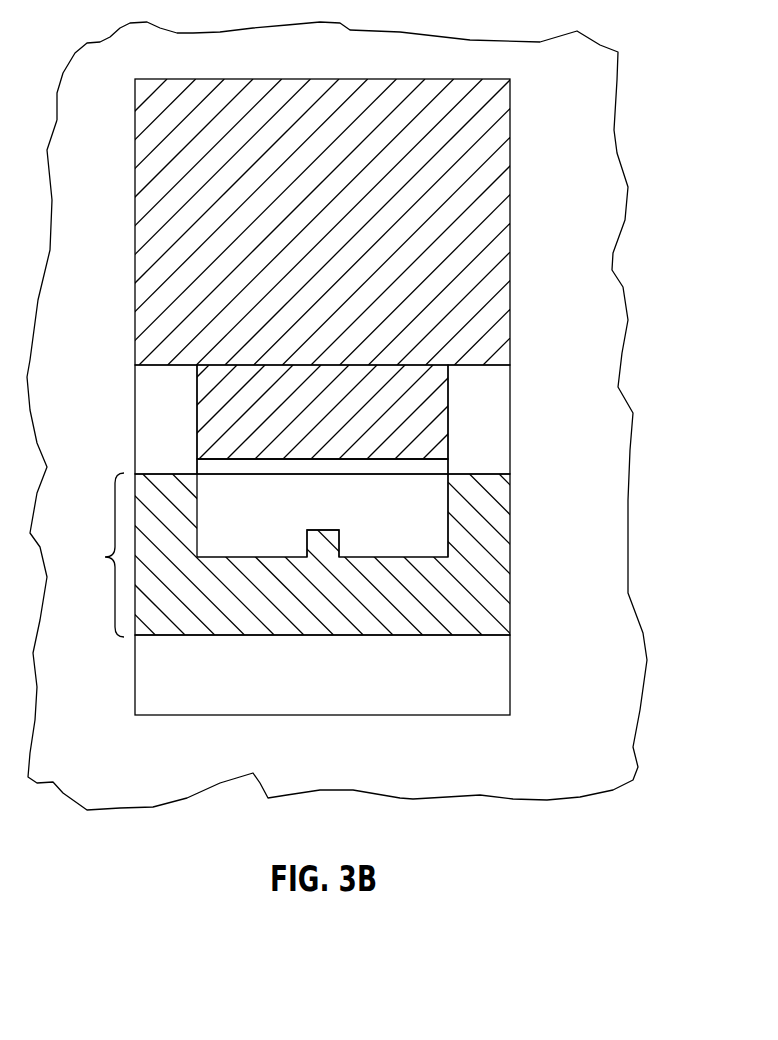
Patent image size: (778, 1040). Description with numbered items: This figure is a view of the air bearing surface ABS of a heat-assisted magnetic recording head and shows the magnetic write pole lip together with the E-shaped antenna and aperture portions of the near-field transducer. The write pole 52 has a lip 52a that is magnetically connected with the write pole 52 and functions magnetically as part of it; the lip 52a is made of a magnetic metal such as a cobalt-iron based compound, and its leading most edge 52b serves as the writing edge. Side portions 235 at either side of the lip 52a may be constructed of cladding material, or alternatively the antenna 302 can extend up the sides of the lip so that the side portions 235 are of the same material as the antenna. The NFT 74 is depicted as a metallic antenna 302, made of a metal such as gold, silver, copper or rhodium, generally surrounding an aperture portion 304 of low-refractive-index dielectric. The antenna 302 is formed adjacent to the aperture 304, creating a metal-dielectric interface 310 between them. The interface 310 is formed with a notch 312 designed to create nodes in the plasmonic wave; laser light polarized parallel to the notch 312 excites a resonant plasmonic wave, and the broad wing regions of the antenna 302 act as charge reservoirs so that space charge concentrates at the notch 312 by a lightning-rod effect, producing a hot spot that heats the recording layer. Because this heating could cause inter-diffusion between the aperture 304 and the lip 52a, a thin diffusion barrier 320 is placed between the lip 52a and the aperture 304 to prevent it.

The air bearing surface ABS is at (603, 163).
The write pole 52 is at (510, 257).
The write pole lip 52a is at (347, 388).
The leading most edge 52b is at (242, 459).
The side portions 235 is at (490, 398).
The diffusion barrier layer 320 is at (450, 463).
The aperture portion 304 is at (433, 500).
The interface 310 is at (417, 553).
The notch 312 is at (330, 530).
The antenna 302 is at (493, 583).
The near-field transducer (NFT) 74 is at (96, 555).